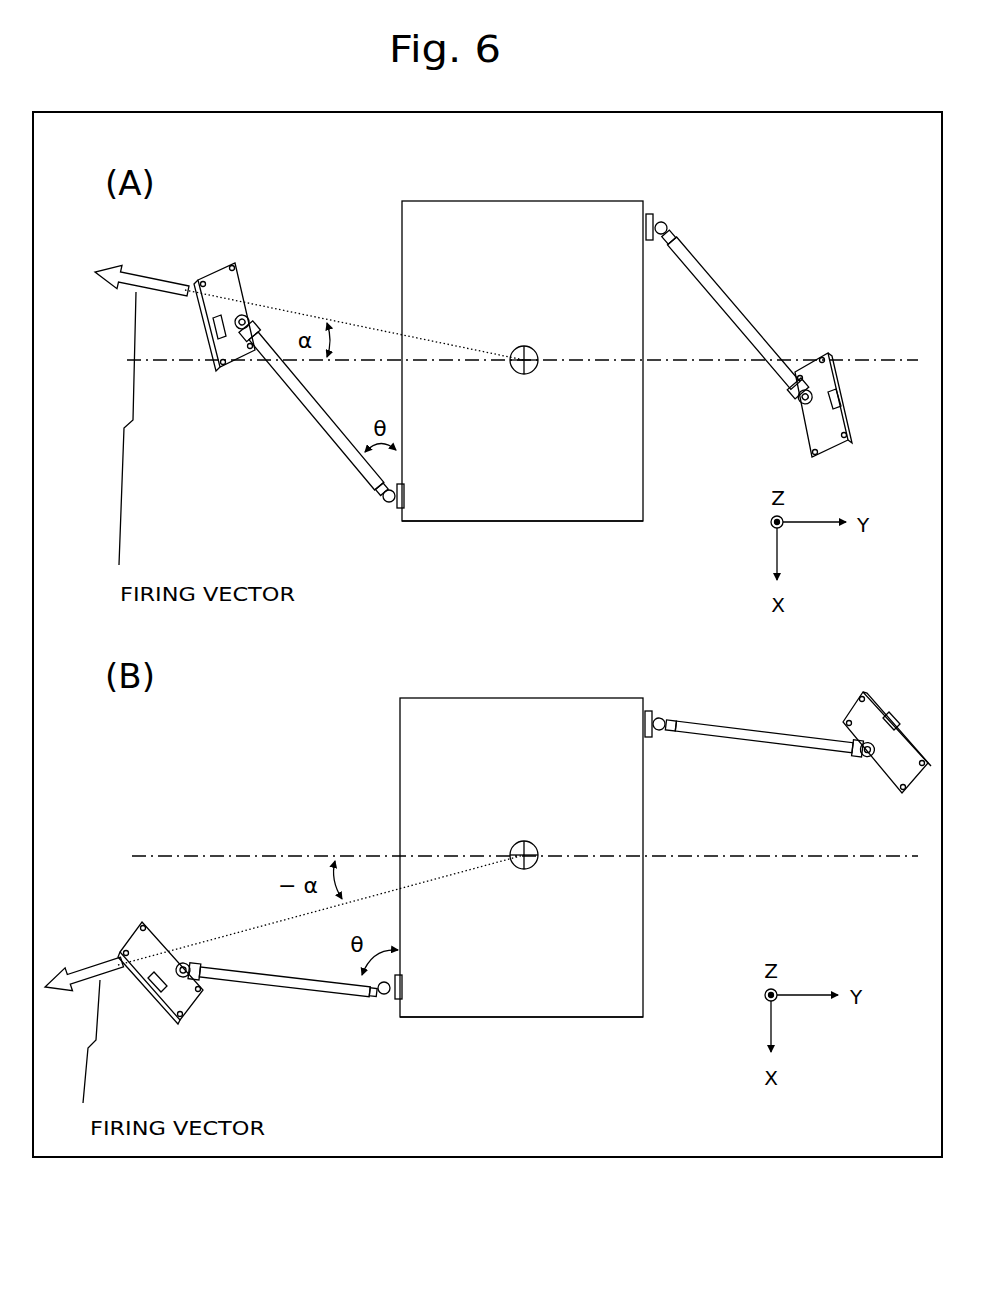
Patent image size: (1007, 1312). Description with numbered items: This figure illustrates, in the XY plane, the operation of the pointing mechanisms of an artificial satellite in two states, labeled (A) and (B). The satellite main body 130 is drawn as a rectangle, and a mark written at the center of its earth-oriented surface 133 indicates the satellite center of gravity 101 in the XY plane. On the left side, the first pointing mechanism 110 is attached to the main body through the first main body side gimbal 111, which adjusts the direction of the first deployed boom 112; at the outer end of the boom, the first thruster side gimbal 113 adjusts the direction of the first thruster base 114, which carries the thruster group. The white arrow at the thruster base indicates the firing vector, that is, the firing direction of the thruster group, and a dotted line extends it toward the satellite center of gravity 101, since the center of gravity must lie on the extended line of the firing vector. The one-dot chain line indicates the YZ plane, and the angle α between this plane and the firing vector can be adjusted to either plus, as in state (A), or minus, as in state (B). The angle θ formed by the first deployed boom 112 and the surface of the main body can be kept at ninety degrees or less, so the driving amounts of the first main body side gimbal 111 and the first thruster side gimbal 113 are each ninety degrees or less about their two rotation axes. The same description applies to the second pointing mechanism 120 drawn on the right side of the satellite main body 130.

The satellite center of gravity 101 is at (536, 348).
The first pointing mechanism 110 is at (231, 660).
The first main body side gimbal 111 is at (383, 505).
The first deployed boom 112 is at (297, 397).
The first thruster side gimbal 113 is at (232, 368).
The first thruster base 114 is at (230, 262).
The second pointing mechanism 120 is at (762, 281).
The satellite main body 130 is at (520, 191).
The earth-oriented surface 133 is at (530, 508).